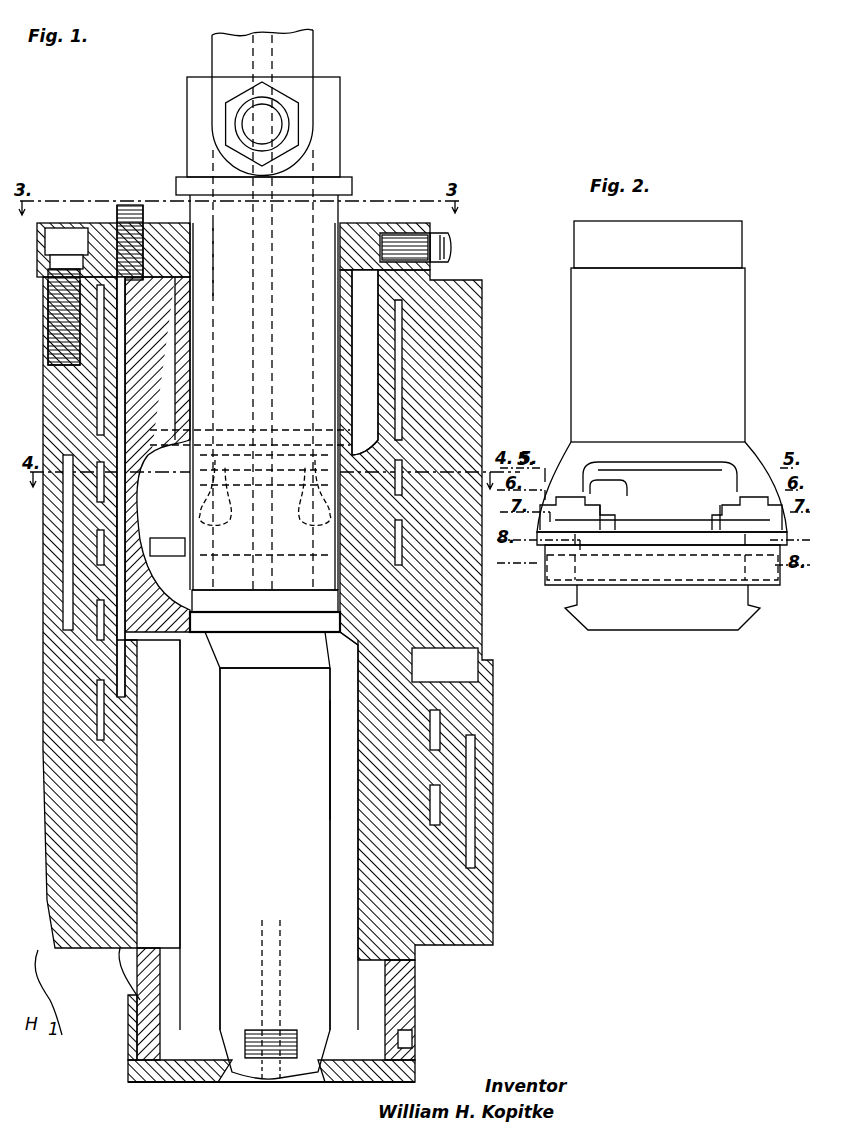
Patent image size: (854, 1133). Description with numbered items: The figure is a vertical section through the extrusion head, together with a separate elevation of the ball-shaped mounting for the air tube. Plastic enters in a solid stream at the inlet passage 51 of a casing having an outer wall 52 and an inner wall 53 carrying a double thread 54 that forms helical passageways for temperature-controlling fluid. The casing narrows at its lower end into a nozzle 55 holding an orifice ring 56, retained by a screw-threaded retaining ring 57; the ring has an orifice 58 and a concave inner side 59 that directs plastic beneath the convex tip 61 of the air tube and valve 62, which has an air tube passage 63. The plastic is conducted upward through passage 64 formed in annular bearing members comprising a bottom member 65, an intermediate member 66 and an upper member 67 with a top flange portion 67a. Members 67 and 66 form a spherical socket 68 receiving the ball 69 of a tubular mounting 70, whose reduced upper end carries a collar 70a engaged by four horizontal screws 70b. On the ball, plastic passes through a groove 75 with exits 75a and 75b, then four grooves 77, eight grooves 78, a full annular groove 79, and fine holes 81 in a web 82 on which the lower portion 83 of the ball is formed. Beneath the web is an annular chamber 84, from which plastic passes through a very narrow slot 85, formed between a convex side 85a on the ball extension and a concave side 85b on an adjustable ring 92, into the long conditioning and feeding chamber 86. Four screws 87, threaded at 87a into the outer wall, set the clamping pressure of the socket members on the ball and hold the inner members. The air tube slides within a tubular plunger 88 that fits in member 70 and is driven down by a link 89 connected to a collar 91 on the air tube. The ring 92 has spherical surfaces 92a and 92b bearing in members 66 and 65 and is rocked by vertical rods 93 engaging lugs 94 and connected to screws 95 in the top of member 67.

In FIG. 1, the inlet passage 51 is at (460, 688).
In FIG. 1, the outer wall 52 is at (90, 415).
In FIG. 1, the inner wall 53 is at (420, 805).
In FIG. 1, the double thread 54 is at (445, 782).
In FIG. 1, the nozzle 55 is at (440, 968).
In FIG. 1, the orifice ring 56 is at (200, 1075).
In FIG. 1, the retaining ring 57 is at (420, 1052).
In FIG. 1, the orifice 58 is at (318, 1082).
In FIG. 1, the concave inner side 59 is at (210, 1040).
In FIG. 1, the convex tip 61 is at (280, 1082).
In FIG. 1, the air tube and valve 62 is at (230, 918).
In FIG. 1, the air tube passage 63 is at (300, 930).
In FIG. 1, the passage 64 is at (470, 470).
In FIG. 1, the bottom member 65 is at (480, 860).
In FIG. 1, the intermediate member 66 is at (400, 618).
In FIG. 1, the upper member 67 is at (455, 312).
In FIG. 1, the top flange portion 67a is at (55, 235).
In FIG. 1, the spherical socket 68 is at (110, 460).
In FIG. 1, the ball 69 is at (150, 475).
In FIG. 2, the ball 69 is at (755, 450).
In FIG. 1, the tubular mounting 70 is at (325, 345).
In FIG. 2, the tubular mounting 70 is at (742, 312).
In FIG. 1, the collar 70a is at (350, 228).
In FIG. 1, the horizontal screws 70b is at (448, 236).
In FIG. 2, the horizontal groove 75 is at (642, 470).
In FIG. 2, the exit 75a is at (560, 500).
In FIG. 2, the exit 75b is at (725, 500).
In FIG. 2, the horizontal grooves 77 is at (598, 475).
In FIG. 2, the horizontal grooves 78 is at (625, 510).
In FIG. 1, the full annular groove 79 is at (150, 545).
In FIG. 2, the full annular groove 79 is at (570, 542).
In FIG. 2, the fine holes 81 is at (702, 550).
In FIG. 1, the web 82 is at (120, 555).
In FIG. 1, the lower portion of the ball 83 is at (120, 556).
In FIG. 1, the annular chamber 84 is at (125, 625).
In FIG. 1, the slot 85 is at (185, 605).
In FIG. 1, the slot side 85a is at (195, 650).
In FIG. 2, the slot side 85a is at (725, 615).
In FIG. 1, the slot side 85b is at (330, 668).
In FIG. 1, the conditioning and feeding chamber 86 is at (238, 818).
In FIG. 1, the screws 87 is at (55, 232).
In FIG. 1, the screw threads 87a is at (62, 333).
In FIG. 1, the tubular plunger 88 is at (222, 250).
In FIG. 1, the link 89 is at (298, 60).
In FIG. 1, the collar 91 is at (325, 112).
In FIG. 1, the adjustable ring 92 is at (195, 765).
In FIG. 1, the spherical outer surface 92a is at (355, 680).
In FIG. 1, the spherical outer surface 92b is at (345, 790).
In FIG. 1, the vertical rod 93 is at (130, 375).
In FIG. 1, the lug 94 is at (125, 735).
In FIG. 1, the screws 95 is at (125, 215).